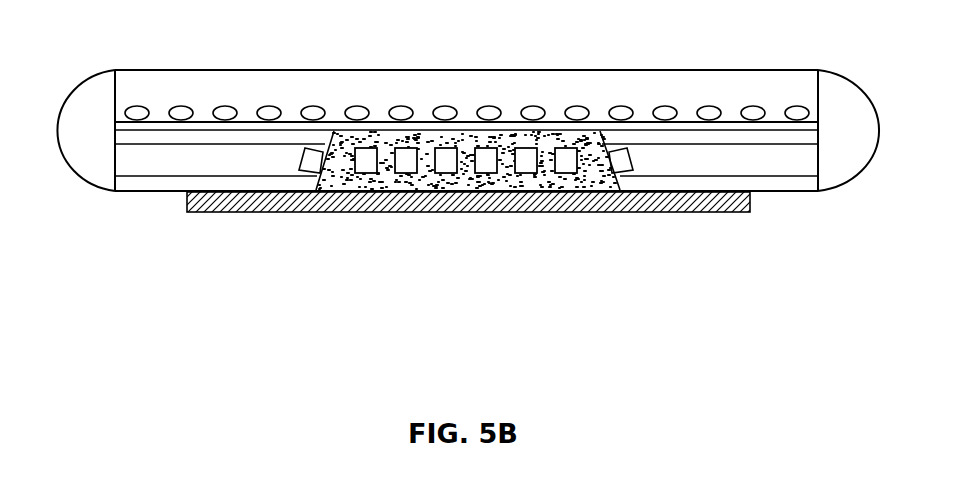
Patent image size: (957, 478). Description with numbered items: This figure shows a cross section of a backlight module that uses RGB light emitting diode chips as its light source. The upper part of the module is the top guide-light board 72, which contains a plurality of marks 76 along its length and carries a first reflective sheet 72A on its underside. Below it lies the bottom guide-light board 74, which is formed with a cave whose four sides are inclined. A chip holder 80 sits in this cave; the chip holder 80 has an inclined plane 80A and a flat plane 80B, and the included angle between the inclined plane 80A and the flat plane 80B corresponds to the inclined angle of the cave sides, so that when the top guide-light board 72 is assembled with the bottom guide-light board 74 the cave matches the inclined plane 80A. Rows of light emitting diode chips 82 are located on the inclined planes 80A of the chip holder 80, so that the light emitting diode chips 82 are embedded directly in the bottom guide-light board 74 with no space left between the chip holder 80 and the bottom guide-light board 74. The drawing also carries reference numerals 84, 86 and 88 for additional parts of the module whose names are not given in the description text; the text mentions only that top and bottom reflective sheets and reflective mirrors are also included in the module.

The top guide-light board 72 is at (670, 88).
The first reflective sheet 72A is at (380, 125).
The bottom guide-light board 74 is at (692, 153).
The marks 76 is at (565, 112).
The chip holder 80 is at (265, 225).
The inclined plane 80A is at (342, 170).
The flat plane 80B is at (358, 198).
The light emitting diode chips 82 is at (527, 160).
The left end cap 84 is at (63, 87).
The reflective layer 86 is at (728, 138).
The base layer 88 is at (772, 183).